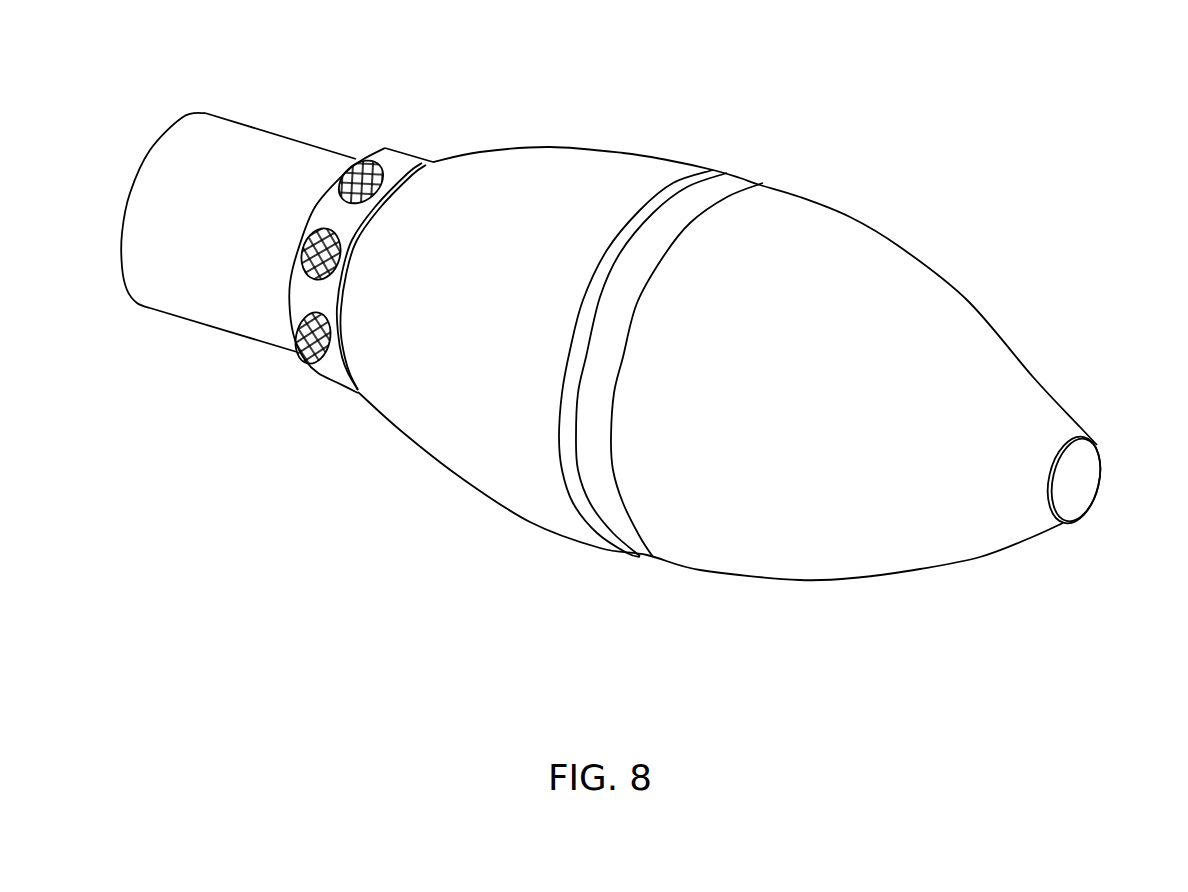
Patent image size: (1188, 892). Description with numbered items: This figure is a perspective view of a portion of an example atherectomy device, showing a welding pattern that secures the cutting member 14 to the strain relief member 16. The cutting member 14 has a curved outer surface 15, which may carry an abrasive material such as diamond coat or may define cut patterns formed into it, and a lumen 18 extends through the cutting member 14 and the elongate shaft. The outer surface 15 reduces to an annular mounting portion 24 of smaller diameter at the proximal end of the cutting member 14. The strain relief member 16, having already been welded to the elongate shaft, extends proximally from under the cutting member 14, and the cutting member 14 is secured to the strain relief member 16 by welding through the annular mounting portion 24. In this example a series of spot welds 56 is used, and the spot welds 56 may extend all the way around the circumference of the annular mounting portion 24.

The cutting member 14 is at (946, 185).
The outer surface 15 is at (800, 404).
The strain relief member 16 is at (217, 123).
The lumen 18 is at (1088, 487).
The annular mounting portion 24 is at (320, 377).
The spot welds 56 is at (367, 163).